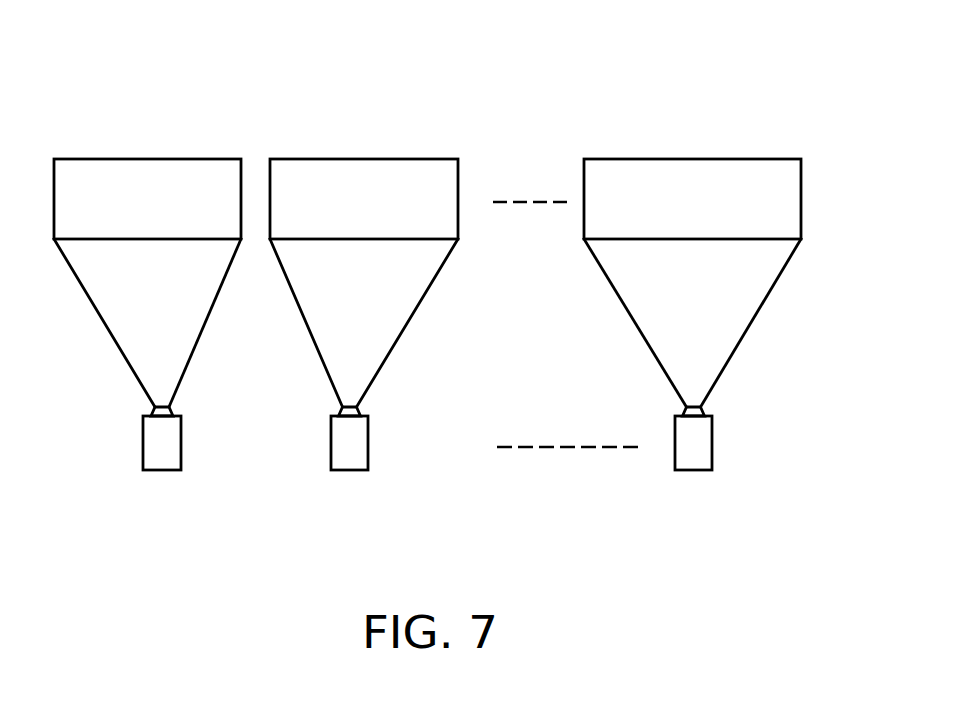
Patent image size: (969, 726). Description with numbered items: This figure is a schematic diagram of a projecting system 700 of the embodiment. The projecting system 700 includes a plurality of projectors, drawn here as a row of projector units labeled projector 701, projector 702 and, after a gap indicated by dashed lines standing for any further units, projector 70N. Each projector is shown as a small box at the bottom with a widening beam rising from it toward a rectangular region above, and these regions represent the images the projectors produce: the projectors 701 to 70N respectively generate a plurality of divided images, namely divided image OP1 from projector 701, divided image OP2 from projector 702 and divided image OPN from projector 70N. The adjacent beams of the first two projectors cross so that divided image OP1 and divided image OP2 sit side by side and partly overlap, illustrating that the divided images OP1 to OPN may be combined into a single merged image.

The divided image OP1 is at (162, 159).
The divided image OP2 is at (355, 159).
The divided image OPN is at (708, 159).
The projector 701 is at (181, 442).
The projector 702 is at (368, 442).
The projector 70N is at (712, 442).
The projecting system 700 is at (432, 325).